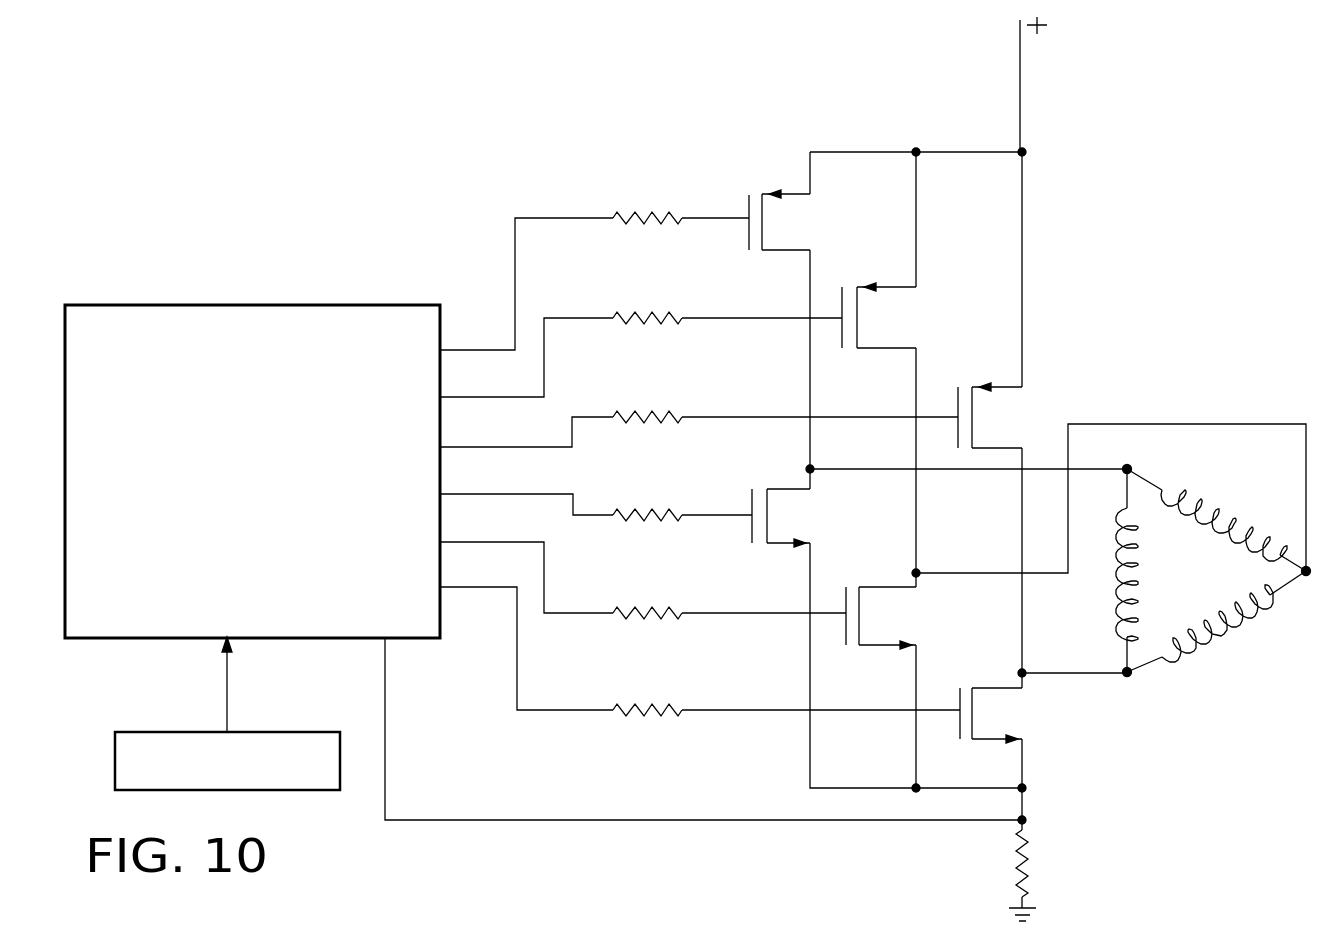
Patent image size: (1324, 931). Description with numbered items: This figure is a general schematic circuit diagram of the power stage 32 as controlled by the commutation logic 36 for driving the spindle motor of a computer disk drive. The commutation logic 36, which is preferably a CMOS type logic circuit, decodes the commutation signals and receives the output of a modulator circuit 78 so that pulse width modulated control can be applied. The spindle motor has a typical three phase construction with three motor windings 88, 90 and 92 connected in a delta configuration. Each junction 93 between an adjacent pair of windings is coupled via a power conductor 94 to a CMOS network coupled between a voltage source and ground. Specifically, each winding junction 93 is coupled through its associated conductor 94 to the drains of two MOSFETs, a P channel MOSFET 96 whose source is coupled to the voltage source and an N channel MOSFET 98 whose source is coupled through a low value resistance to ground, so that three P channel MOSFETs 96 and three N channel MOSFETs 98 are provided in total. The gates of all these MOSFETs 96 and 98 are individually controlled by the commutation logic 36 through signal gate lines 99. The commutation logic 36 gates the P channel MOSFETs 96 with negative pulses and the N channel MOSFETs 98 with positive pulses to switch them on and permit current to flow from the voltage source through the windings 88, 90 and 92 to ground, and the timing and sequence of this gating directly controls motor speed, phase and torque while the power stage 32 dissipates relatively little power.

The power stage 32 is at (569, 172).
The commutation logic circuit 36 is at (268, 305).
The modulator circuit 78 is at (285, 732).
The motor winding 88 is at (1215, 635).
The motor winding 90 is at (1207, 513).
The motor winding 92 is at (1137, 583).
The winding junction 93 is at (1130, 470).
The power conductor 94 is at (870, 455).
The P channel MOSFET 96 is at (769, 176).
The N channel MOSFET 98 is at (750, 551).
The signal gate line 99 is at (580, 202).